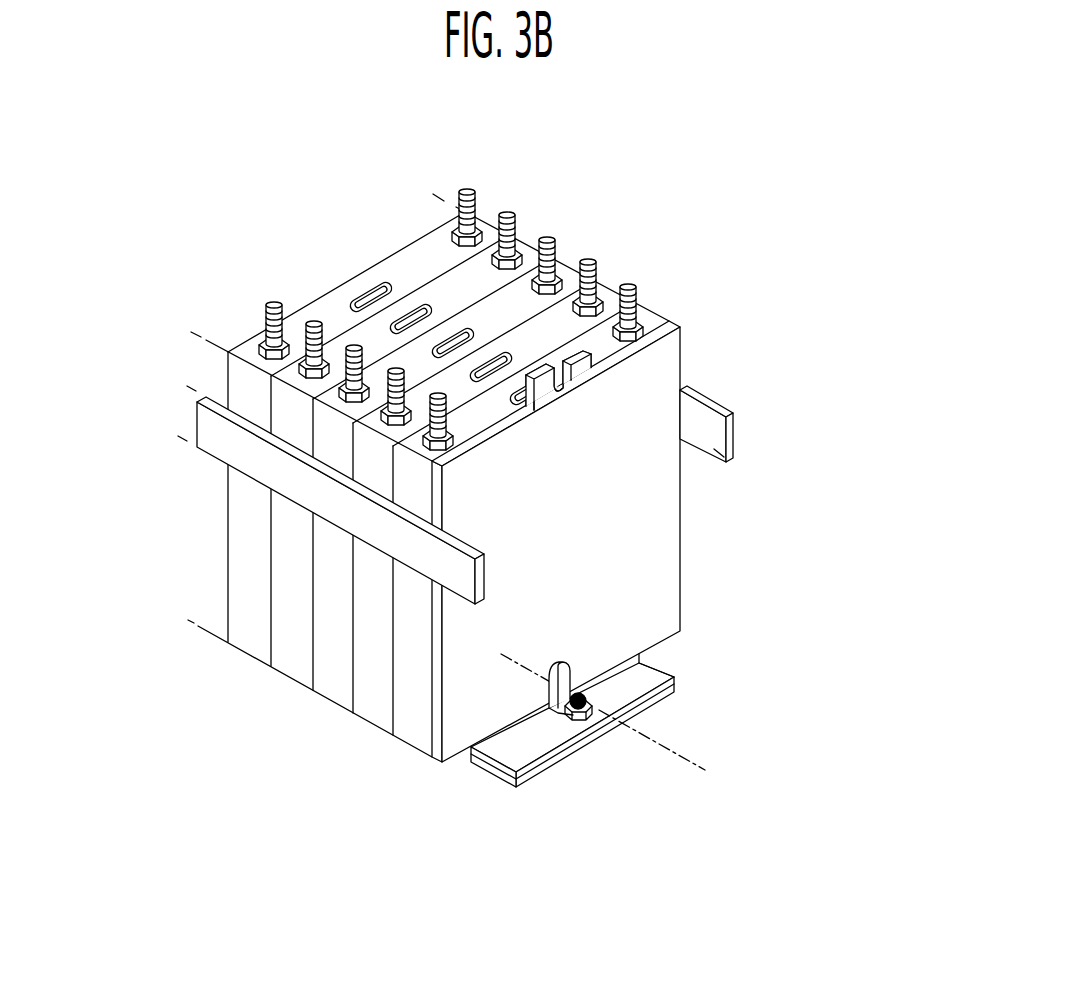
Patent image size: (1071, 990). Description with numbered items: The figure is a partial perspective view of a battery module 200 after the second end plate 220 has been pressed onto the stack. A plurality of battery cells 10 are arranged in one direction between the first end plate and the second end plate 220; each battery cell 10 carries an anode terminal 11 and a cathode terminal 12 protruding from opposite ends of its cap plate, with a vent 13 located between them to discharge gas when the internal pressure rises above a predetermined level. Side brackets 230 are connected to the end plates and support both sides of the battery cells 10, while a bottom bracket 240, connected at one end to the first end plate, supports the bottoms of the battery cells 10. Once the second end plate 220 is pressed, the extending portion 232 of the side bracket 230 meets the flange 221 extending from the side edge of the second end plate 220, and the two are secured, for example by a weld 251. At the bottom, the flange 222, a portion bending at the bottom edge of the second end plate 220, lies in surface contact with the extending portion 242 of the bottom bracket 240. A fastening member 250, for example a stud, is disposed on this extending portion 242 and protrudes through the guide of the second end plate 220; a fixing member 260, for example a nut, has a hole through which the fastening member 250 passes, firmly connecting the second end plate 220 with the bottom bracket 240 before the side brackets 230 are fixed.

The battery cell 10 is at (330, 695).
The anode terminal 11 is at (462, 198).
The cathode terminal 12 is at (267, 322).
The vent 13 is at (366, 292).
The battery module 200 is at (665, 196).
The second end plate 220 is at (629, 523).
The flange 221 is at (488, 580).
The flange 222 is at (651, 671).
The side bracket 230 is at (508, 581).
The extending portion 232 is at (465, 592).
The bottom bracket 240 is at (568, 765).
The extending portion 242 is at (474, 765).
The fastening member 250 is at (646, 727).
The weld 251 is at (733, 443).
The fixing member 260 is at (594, 720).